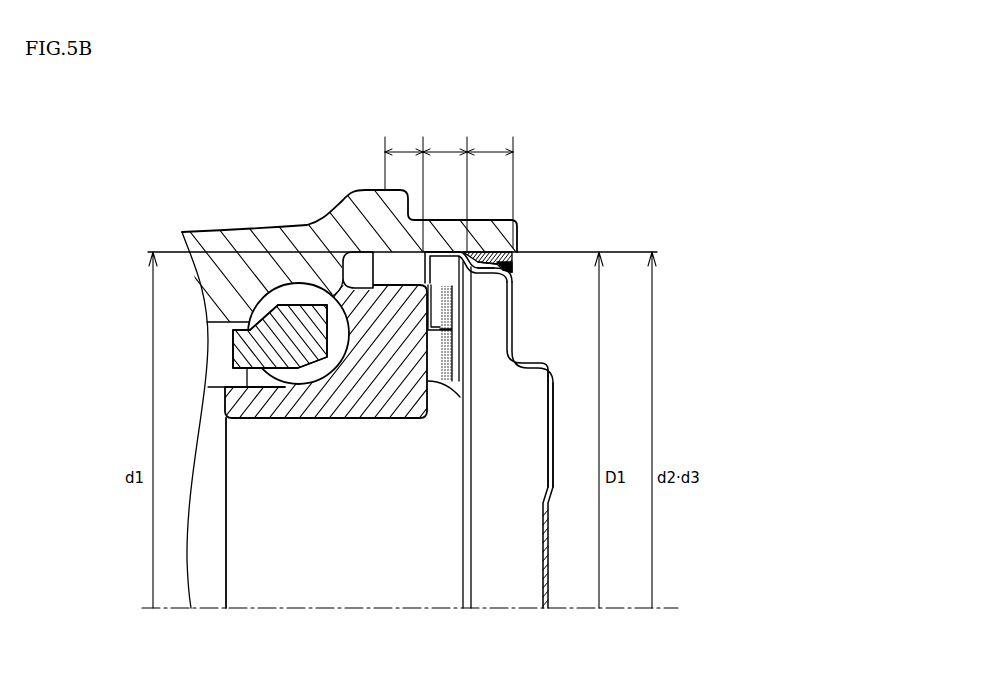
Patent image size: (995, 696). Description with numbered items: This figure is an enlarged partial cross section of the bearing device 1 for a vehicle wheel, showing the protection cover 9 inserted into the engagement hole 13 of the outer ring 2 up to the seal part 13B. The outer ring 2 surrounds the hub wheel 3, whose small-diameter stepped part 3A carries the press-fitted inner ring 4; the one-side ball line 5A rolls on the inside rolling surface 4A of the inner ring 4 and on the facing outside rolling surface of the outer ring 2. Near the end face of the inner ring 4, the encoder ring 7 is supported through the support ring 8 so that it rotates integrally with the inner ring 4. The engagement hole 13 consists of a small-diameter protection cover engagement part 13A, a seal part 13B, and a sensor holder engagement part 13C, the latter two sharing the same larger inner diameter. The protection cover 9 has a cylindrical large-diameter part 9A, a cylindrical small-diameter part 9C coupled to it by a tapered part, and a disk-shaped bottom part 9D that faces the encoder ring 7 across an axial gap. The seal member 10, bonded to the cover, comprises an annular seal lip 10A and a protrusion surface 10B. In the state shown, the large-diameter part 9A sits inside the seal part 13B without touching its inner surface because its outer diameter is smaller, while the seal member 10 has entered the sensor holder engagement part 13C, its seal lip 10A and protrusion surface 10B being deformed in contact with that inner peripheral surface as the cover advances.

The bearing device for vehicle wheel 1 is at (106, 146).
The outer ring 2 is at (259, 176).
The hub wheel 3 is at (252, 602).
The small-diameter stepped part 3A is at (382, 420).
The inner ring 4 is at (270, 417).
The inside rolling surface 4A is at (329, 375).
The one-side ball line 5A is at (310, 375).
The encoder ring 7 is at (455, 360).
The support ring 8 is at (371, 285).
The protection cover 9 is at (570, 333).
The large-diameter part 9A is at (437, 250).
The small-diameter part 9C is at (490, 274).
The bottom part 9D is at (514, 337).
The seal member 10 is at (529, 190).
The seal lip 10A is at (517, 250).
The protrusion surface 10B is at (479, 252).
The engagement hole 13 is at (583, 238).
The protection cover engagement part 13A is at (404, 159).
The seal part 13B is at (445, 190).
The sensor holder engagement part 13C is at (490, 190).